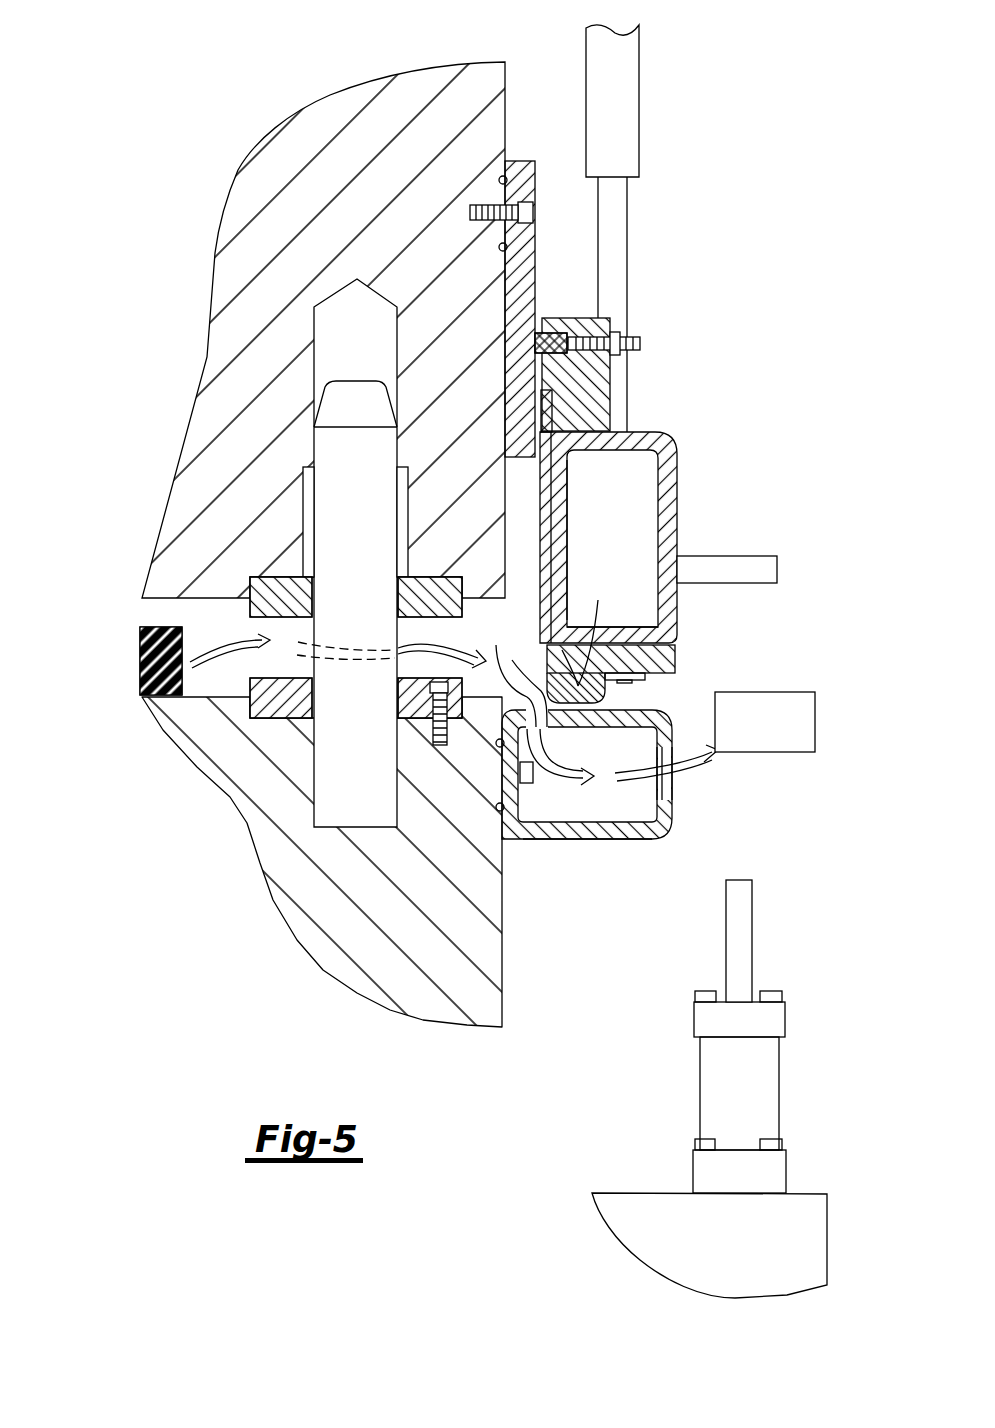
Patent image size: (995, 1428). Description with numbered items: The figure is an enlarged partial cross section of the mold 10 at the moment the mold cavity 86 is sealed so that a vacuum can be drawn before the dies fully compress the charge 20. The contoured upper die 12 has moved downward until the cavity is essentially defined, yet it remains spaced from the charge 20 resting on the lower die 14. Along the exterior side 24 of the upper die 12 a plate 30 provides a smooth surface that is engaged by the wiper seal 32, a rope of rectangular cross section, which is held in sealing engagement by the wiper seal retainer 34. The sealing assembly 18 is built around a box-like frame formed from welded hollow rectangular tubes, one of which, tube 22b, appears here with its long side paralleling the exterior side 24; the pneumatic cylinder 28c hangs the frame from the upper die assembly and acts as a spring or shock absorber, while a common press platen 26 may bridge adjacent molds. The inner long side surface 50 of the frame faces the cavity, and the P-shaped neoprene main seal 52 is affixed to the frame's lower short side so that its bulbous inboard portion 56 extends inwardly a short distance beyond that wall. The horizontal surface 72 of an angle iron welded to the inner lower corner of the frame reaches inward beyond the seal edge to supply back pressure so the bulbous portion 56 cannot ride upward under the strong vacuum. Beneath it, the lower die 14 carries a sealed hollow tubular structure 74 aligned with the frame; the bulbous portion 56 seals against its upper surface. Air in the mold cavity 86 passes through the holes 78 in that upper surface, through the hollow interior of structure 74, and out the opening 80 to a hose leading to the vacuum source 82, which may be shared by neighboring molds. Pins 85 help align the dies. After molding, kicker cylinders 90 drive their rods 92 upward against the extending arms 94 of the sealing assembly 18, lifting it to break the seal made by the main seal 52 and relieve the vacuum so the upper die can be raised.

The mold 10 is at (221, 131).
The upper die 12 is at (215, 347).
The lower die 14 is at (270, 863).
The sealing assembly 18 is at (710, 440).
The charge 20 is at (140, 640).
The hollow rectangular tube 22b is at (680, 590).
The exterior side 24 is at (507, 117).
The press platen 26 is at (648, 705).
The pneumatic cylinder 28c is at (639, 125).
The plate 30 is at (533, 250).
The wiper seal 32 is at (545, 318).
The wiper seal retainer 34 is at (620, 383).
The inner long side surface 50 is at (550, 520).
The main seal 52 is at (678, 655).
The bulbous inboard portion 56 is at (594, 633).
The horizontal surface 72 is at (598, 600).
The sealed hollow tubular structure 74 is at (600, 843).
The holes 78 is at (522, 672).
The opening 80 is at (680, 780).
The vacuum source 82 is at (815, 716).
The pins 85 is at (344, 544).
The mold cavity 86 is at (207, 636).
The kicker cylinders 90 is at (720, 1092).
The rods 92 is at (737, 949).
The extending arms 94 is at (770, 573).